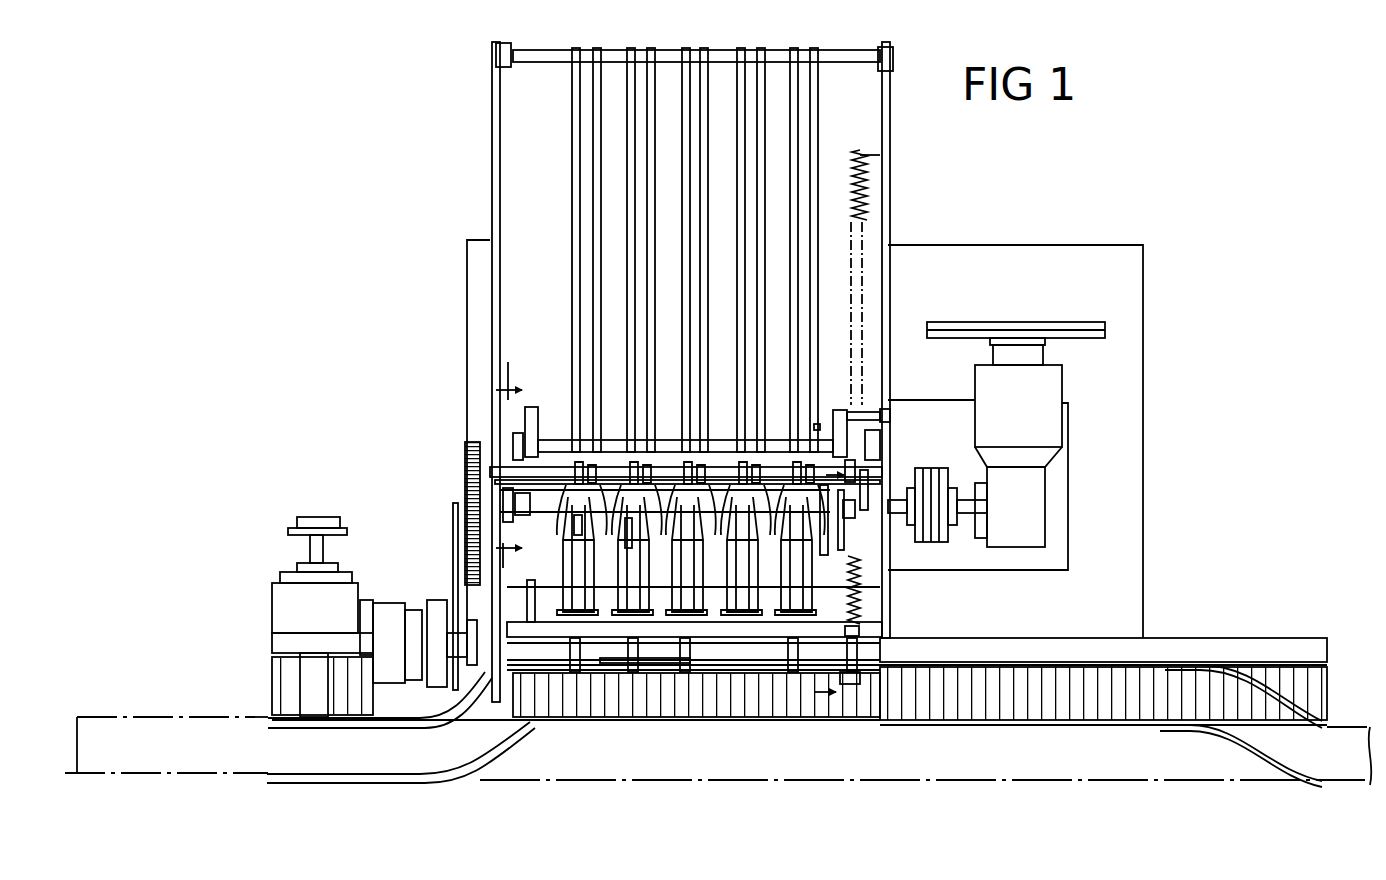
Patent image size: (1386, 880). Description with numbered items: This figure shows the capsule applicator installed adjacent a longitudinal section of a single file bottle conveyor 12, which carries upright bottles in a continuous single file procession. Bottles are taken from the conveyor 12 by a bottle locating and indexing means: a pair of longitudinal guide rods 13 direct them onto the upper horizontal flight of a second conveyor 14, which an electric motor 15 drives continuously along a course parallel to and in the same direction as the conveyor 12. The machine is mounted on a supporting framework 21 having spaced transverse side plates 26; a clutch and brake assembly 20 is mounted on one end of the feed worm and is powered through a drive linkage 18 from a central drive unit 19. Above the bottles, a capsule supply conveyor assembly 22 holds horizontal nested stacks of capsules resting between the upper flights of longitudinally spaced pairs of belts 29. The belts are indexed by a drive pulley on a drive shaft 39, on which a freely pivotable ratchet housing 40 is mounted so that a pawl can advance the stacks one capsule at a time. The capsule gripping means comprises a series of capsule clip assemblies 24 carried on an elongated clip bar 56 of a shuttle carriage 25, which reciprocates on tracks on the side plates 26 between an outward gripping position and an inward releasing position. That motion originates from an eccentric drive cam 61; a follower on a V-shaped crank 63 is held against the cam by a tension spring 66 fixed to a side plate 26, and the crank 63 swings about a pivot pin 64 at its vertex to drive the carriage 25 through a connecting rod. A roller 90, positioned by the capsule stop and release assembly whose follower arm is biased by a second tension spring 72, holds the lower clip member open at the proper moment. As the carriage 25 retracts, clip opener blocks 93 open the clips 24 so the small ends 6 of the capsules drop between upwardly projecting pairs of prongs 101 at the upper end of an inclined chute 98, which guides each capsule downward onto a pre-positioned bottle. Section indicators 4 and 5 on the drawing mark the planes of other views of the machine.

The section line 4- 4 is at (837, 584).
The section line 5- 5 is at (817, 541).
The small ends of the capsules 6 is at (513, 470).
The single file bottle conveyor 12 is at (1048, 767).
The longitudinal guide rods 13 is at (983, 665).
The second conveyor 14 is at (1053, 707).
The electric motor 15 is at (280, 605).
The drive linkage 18 is at (463, 533).
The central drive unit 19 is at (1064, 381).
The clutch and brake assembly 20 is at (405, 578).
The supporting framework 21 is at (1147, 577).
The capsule supply conveyor assembly 22 is at (568, 292).
The capsule clip assemblies 24 is at (744, 632).
The shuttle carriage 25 is at (874, 628).
The transverse side plates 26 is at (493, 205).
The belts 29 is at (710, 46).
The drive shaft 39 is at (513, 441).
The ratchet housing 40 is at (530, 407).
The clip bar 56 is at (600, 630).
The eccentric drive cam 61 is at (862, 532).
The V-shaped crank 63 is at (862, 572).
The pivot pin 64 is at (862, 608).
The tension spring 66 is at (867, 182).
The tension spring 72 is at (812, 427).
The roller 90 is at (636, 512).
The clip opener blocks 93 is at (682, 663).
The inclined guide or chute 98 is at (632, 552).
The prongs 101 is at (578, 517).